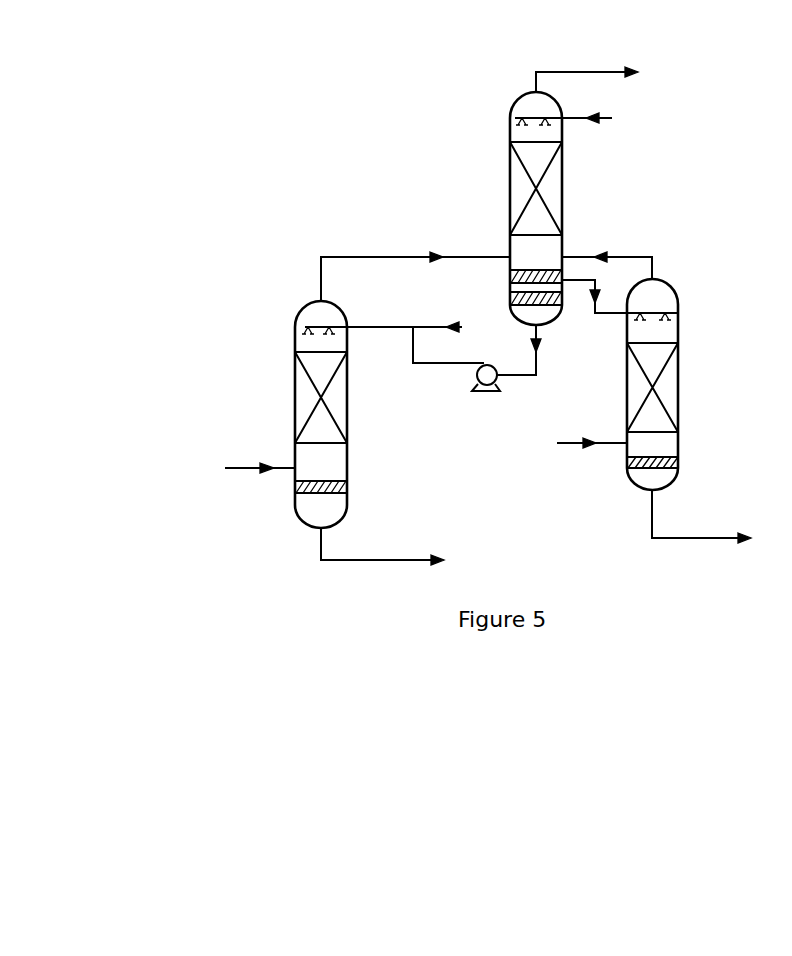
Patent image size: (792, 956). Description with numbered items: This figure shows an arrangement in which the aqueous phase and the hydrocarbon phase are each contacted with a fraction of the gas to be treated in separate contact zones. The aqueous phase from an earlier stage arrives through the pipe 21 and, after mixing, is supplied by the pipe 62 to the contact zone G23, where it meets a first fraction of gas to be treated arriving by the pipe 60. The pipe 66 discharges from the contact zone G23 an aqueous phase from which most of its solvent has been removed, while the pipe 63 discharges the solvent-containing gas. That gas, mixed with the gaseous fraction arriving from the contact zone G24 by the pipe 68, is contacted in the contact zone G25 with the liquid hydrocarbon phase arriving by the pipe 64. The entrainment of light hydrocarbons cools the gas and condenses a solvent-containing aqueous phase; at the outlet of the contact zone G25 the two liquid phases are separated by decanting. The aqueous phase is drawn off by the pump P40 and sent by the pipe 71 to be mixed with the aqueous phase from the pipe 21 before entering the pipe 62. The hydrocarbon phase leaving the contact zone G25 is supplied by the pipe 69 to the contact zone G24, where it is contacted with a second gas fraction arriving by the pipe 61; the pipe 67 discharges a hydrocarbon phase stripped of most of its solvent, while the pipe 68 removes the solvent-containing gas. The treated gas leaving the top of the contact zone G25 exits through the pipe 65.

The contact zone G23 is at (347, 433).
The contact zone G24 is at (678, 410).
The contact zone G25 is at (562, 175).
The pump P40 is at (481, 391).
The pipe 60 is at (235, 468).
The pipe 61 is at (575, 443).
The pipe 62 is at (389, 327).
The pipe 63 is at (383, 257).
The pipe 64 is at (607, 118).
The purified gas outlet line 65 is at (594, 72).
The pipe 66 is at (373, 561).
The pipe 67 is at (692, 539).
The pipe 68 is at (636, 257).
The pipe 69 is at (601, 314).
The pipe 71 is at (421, 364).
The pipe 21 is at (441, 327).